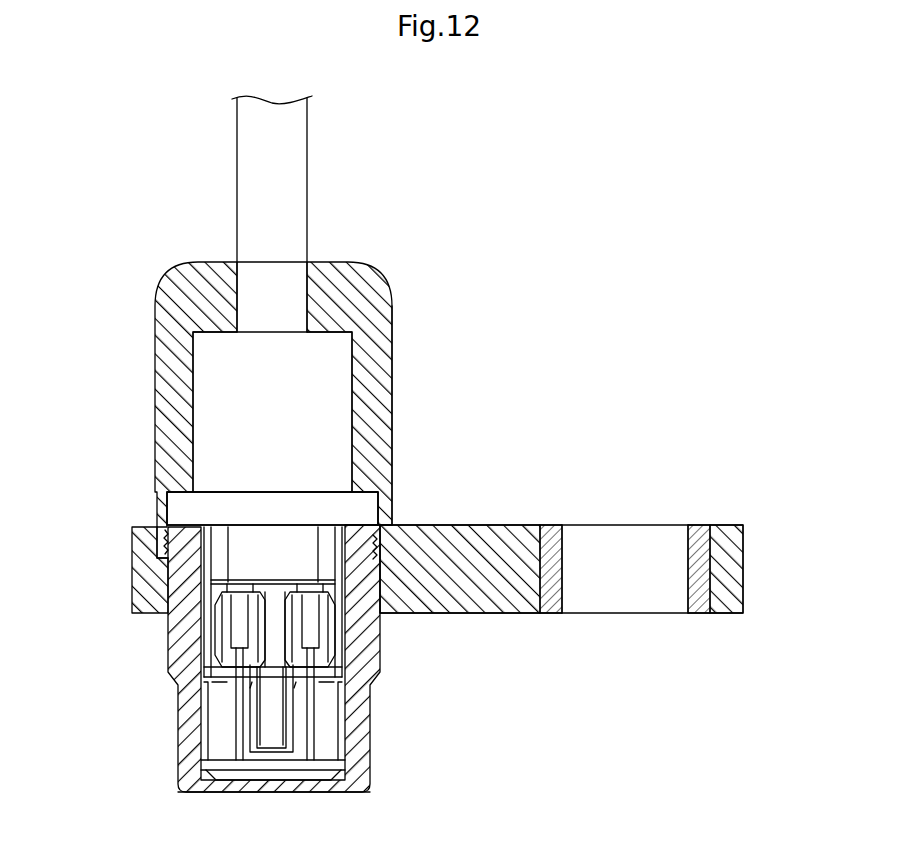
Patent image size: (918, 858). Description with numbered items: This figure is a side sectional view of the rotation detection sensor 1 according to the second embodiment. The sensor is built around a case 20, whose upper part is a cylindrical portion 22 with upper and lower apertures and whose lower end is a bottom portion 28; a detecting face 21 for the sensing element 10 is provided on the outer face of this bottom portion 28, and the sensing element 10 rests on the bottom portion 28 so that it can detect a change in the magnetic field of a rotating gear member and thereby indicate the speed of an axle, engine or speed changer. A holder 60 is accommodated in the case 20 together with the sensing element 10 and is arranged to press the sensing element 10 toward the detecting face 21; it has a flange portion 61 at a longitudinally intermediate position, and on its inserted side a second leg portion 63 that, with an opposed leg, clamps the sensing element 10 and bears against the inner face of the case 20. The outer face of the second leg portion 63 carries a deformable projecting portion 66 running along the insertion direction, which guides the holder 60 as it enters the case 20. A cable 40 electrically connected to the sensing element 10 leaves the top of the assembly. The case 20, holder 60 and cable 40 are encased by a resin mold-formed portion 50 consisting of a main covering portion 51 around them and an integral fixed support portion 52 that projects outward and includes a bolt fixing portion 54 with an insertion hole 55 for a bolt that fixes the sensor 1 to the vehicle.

The rotation detection sensor 1 is at (160, 190).
The sensing element 10 is at (210, 728).
The case 20 is at (164, 648).
The detecting face 21 is at (298, 790).
The cylindrical portion 22 is at (175, 585).
The bottom portion 28 is at (243, 778).
The cable 40 is at (307, 165).
The mold-formed portion 50 is at (386, 293).
The main covering portion 51 is at (392, 410).
The fixed support portion 52 is at (478, 613).
The bolt fixing portion 54 is at (743, 557).
The insertion hole 55 is at (627, 613).
The holder 60 is at (190, 446).
The flange portion 61 is at (170, 507).
The second leg portion 63 is at (293, 718).
The projecting portion 66 is at (285, 735).